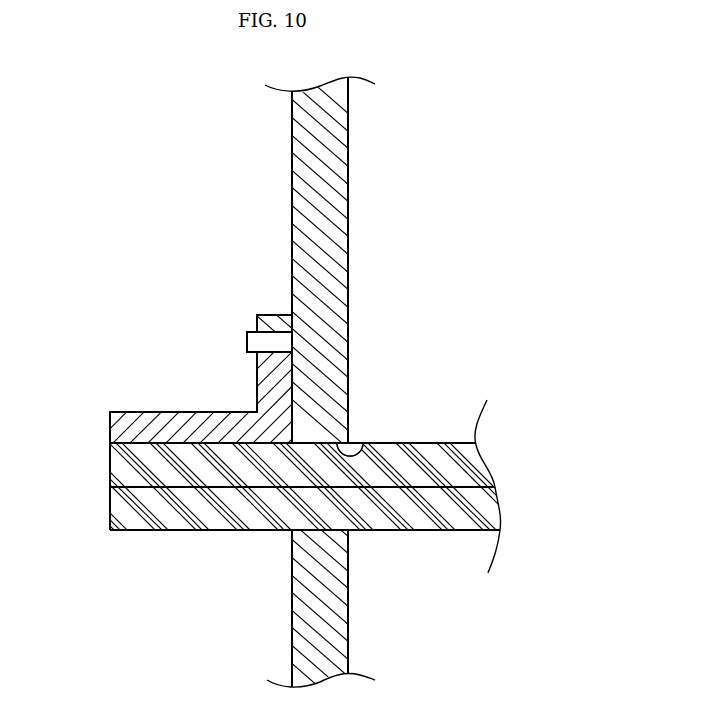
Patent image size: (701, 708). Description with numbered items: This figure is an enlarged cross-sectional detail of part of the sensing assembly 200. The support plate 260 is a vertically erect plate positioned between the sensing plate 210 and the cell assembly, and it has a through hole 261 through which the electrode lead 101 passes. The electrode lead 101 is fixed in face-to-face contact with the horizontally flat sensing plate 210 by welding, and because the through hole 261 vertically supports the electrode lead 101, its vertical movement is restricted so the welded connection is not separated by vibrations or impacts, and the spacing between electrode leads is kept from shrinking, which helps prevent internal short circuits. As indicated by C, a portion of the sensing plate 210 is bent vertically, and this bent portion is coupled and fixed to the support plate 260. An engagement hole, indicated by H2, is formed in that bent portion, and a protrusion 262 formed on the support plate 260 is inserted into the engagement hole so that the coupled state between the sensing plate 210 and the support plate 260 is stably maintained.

The sensing assembly 200 is at (205, 368).
The support plate 260 is at (342, 186).
The through hole 261 is at (368, 443).
The protrusion 262 is at (250, 330).
The engagement hole H2 is at (273, 334).
The bent portion C is at (210, 357).
The sensing plate 210 is at (120, 425).
The electrode lead 101 is at (118, 492).